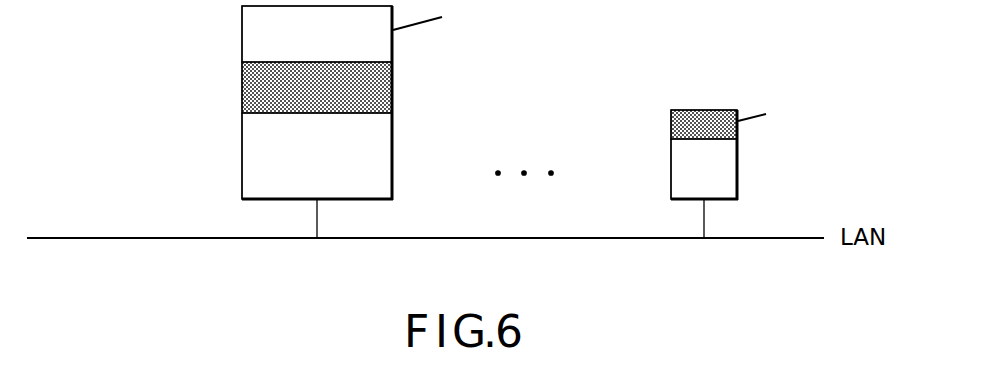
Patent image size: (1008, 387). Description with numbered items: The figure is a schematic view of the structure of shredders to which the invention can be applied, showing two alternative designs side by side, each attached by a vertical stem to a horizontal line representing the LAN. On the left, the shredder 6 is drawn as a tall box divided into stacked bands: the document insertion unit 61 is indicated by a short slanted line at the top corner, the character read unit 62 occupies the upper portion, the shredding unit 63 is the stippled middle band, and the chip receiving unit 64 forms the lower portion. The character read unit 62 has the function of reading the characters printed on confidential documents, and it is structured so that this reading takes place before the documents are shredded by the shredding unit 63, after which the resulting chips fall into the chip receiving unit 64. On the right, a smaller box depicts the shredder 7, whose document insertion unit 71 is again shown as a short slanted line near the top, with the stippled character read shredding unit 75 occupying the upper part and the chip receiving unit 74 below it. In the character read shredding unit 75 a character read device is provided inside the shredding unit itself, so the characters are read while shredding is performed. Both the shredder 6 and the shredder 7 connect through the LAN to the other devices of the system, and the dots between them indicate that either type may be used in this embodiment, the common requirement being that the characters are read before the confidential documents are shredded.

The shredder 6 is at (192, 93).
The document insertion unit 61 is at (423, 25).
The character read unit 62 is at (262, 37).
The shredding unit 63 is at (375, 88).
The chip receiving unit 64 is at (260, 161).
The shredder 7 is at (755, 146).
The document insertion unit 71 is at (752, 112).
The chip receiving unit 74 is at (690, 172).
The character read shredding unit 75 is at (683, 123).